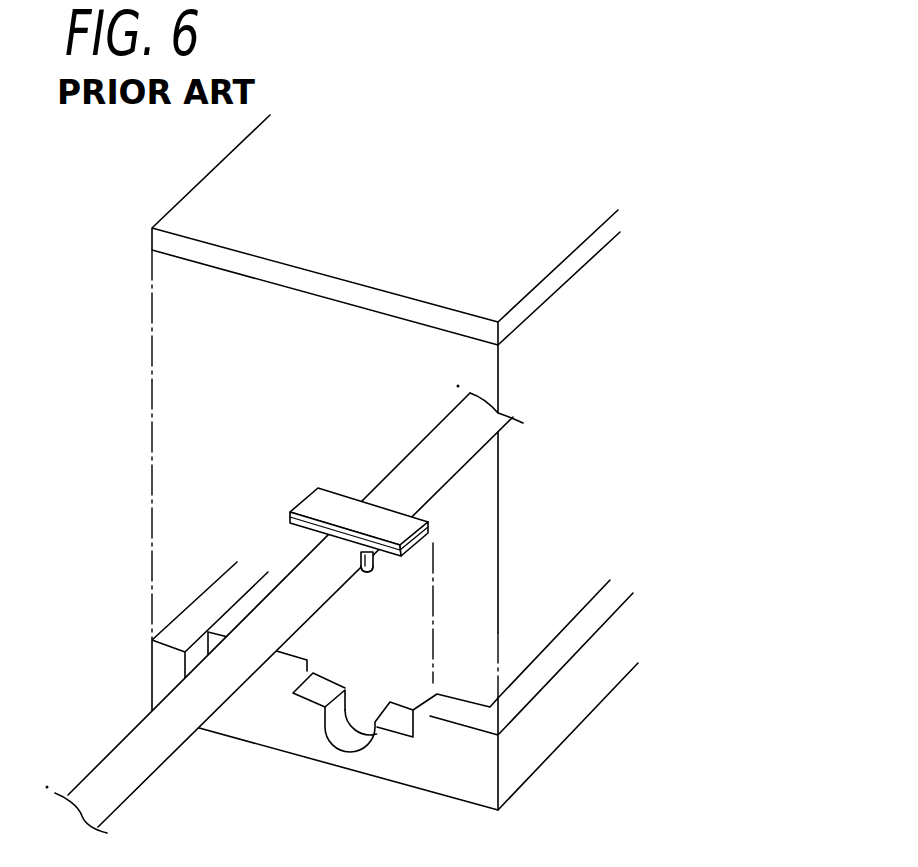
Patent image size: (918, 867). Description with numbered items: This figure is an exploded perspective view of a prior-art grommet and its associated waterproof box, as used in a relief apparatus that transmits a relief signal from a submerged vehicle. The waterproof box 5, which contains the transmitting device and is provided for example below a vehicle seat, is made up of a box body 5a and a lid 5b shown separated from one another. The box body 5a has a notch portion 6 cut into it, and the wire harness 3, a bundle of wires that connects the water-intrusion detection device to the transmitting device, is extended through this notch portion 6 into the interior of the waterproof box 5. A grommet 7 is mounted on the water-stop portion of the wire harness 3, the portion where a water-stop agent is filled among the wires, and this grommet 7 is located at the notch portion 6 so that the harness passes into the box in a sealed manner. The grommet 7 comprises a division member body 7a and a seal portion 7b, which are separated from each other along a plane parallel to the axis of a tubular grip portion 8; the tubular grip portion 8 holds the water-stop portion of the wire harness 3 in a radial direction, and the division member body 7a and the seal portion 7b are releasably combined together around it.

The wire harness 3 is at (417, 477).
The waterproof box 5 is at (485, 467).
The box body 5a is at (460, 582).
The lid 5b is at (585, 255).
The notch portion 6 is at (343, 737).
The grommet 7 is at (357, 613).
The division member body 7a is at (292, 506).
The seal portion 7b is at (415, 550).
The tubular grip portion 8 is at (373, 558).